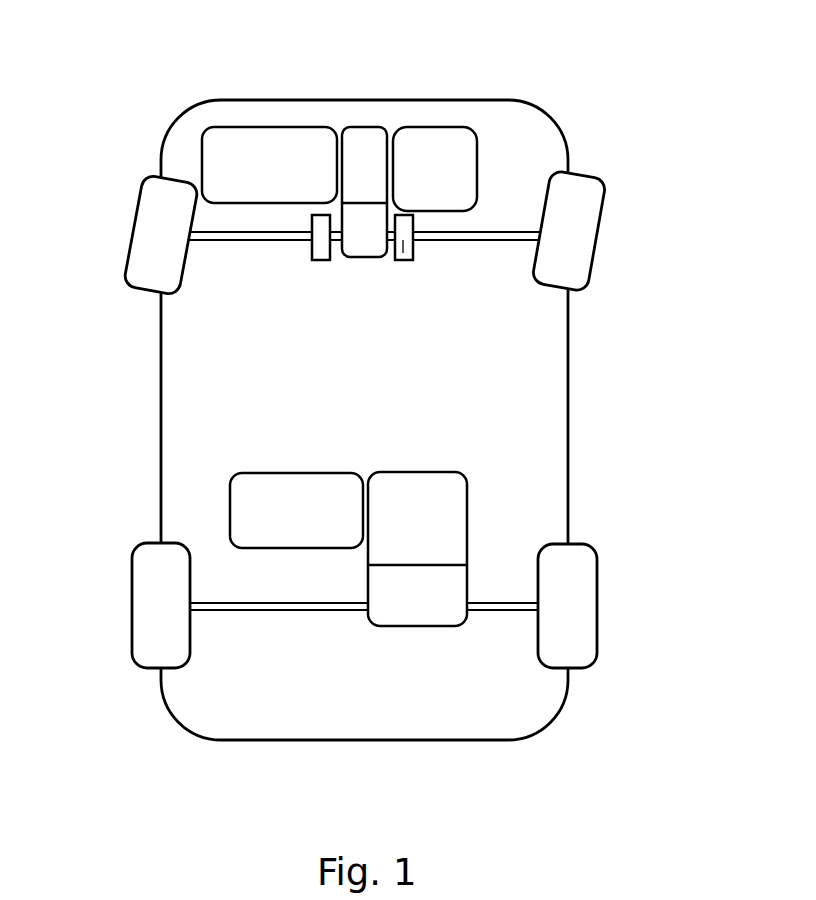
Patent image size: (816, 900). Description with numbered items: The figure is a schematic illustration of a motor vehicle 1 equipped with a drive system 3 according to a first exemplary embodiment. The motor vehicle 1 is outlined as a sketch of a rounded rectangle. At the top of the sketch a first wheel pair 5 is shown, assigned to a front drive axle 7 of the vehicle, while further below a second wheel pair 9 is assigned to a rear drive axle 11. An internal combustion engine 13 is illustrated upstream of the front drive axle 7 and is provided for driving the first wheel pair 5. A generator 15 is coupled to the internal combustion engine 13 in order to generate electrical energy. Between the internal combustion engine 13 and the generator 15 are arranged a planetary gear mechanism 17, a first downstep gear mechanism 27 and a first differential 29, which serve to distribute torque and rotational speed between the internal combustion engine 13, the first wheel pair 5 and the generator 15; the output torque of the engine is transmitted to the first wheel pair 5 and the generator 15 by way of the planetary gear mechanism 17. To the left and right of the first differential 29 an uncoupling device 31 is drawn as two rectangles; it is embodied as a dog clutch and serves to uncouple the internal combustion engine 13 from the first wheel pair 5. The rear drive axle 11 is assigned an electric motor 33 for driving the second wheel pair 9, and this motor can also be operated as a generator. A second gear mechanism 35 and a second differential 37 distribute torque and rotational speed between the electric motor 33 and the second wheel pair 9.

The motor vehicle 1 is at (130, 130).
The drive system 3 is at (504, 385).
The first wheel pair 5 is at (158, 173).
The front drive axle 7 is at (218, 241).
The second wheel pair 9 is at (142, 667).
The rear drive axle 11 is at (230, 602).
The internal combustion engine 13 is at (438, 168).
The generator 15 is at (225, 192).
The planetary gear mechanism 17 is at (363, 158).
The first downstep gear mechanism 27 is at (363, 235).
The first differential 29 is at (380, 258).
The uncoupling device 31 is at (403, 253).
The electric motor 33 is at (253, 507).
The second gear mechanism 35 is at (425, 513).
The second differential 37 is at (417, 603).